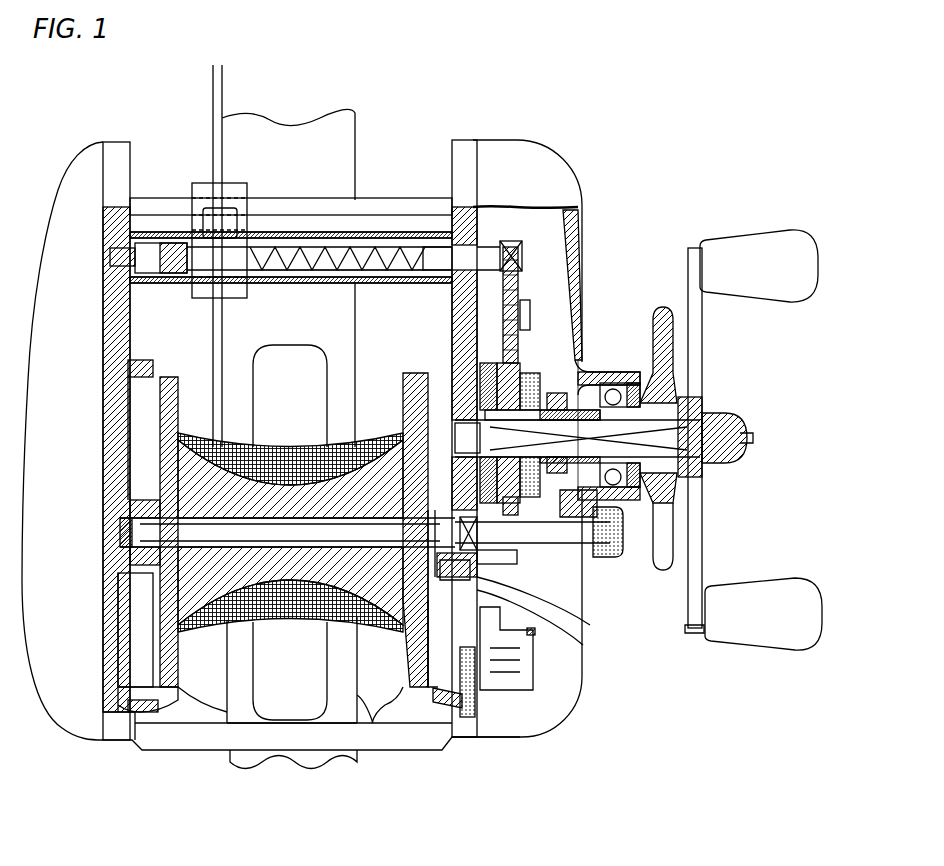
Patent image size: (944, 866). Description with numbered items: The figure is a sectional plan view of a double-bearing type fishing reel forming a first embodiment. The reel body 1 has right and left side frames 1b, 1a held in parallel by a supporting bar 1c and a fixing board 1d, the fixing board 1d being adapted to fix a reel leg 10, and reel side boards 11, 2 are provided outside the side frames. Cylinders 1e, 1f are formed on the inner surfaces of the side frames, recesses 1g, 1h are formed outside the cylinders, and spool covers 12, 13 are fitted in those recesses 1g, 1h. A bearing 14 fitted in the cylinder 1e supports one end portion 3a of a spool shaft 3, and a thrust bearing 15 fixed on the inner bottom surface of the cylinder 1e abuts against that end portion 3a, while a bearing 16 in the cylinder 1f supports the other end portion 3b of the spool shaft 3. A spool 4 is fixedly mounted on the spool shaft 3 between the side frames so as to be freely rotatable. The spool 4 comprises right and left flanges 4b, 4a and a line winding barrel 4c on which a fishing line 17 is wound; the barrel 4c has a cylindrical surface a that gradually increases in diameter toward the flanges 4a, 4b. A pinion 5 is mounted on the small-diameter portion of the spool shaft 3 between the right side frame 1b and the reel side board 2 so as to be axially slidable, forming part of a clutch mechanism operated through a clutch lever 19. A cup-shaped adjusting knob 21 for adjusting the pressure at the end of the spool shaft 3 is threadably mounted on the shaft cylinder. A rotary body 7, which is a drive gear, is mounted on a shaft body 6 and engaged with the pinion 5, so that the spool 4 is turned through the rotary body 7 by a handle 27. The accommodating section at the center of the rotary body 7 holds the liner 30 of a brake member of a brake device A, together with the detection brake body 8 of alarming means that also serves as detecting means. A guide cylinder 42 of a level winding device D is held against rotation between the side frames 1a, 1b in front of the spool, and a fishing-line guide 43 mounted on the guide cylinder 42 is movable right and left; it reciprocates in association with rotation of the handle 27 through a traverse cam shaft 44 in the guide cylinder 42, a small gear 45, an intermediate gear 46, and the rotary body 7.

The reel body 1 is at (101, 137).
The left side frame 1a is at (127, 140).
The right side frame 1b is at (466, 140).
The supporting bar 1c is at (244, 750).
The fixing board 1d is at (362, 700).
The cylinder 1e is at (117, 588).
The cylinder 1f is at (480, 615).
The recess 1g is at (138, 712).
The recess 1h is at (480, 697).
The reel side board 2 is at (566, 152).
The spool shaft 3 is at (294, 530).
The end portion of spool shaft 3a is at (116, 560).
The other end portion of spool shaft 3b is at (493, 633).
The spool 4 is at (405, 700).
The left flange 4a is at (190, 702).
The right flange 4b is at (432, 705).
The line winding barrel 4c is at (278, 612).
The pinion 5 is at (545, 562).
The shaft body 6 is at (752, 438).
The rotary body 7 is at (557, 348).
The detection brake body 8 is at (565, 370).
The reel leg 10 is at (372, 700).
The reel side board 11 is at (63, 178).
The spool cover 12 is at (156, 712).
The spool cover 13 is at (438, 722).
The bearing 14 is at (116, 508).
The thrust bearing 15 is at (116, 540).
The bearing 16 is at (440, 573).
The fishing line 17 is at (226, 85).
The clutch lever 19 is at (537, 680).
The adjusting knob 21 is at (618, 540).
The handle 27 is at (702, 335).
The liner 30 is at (650, 503).
The guide cylinder 42 is at (424, 233).
The fishing-line guide 43 is at (199, 183).
The traverse cam shaft 44 is at (388, 244).
The small gear 45 is at (522, 240).
The intermediate gear 46 is at (530, 284).
The brake device A is at (558, 318).
The level winding device D is at (247, 165).
The cylindrical surface a is at (297, 458).